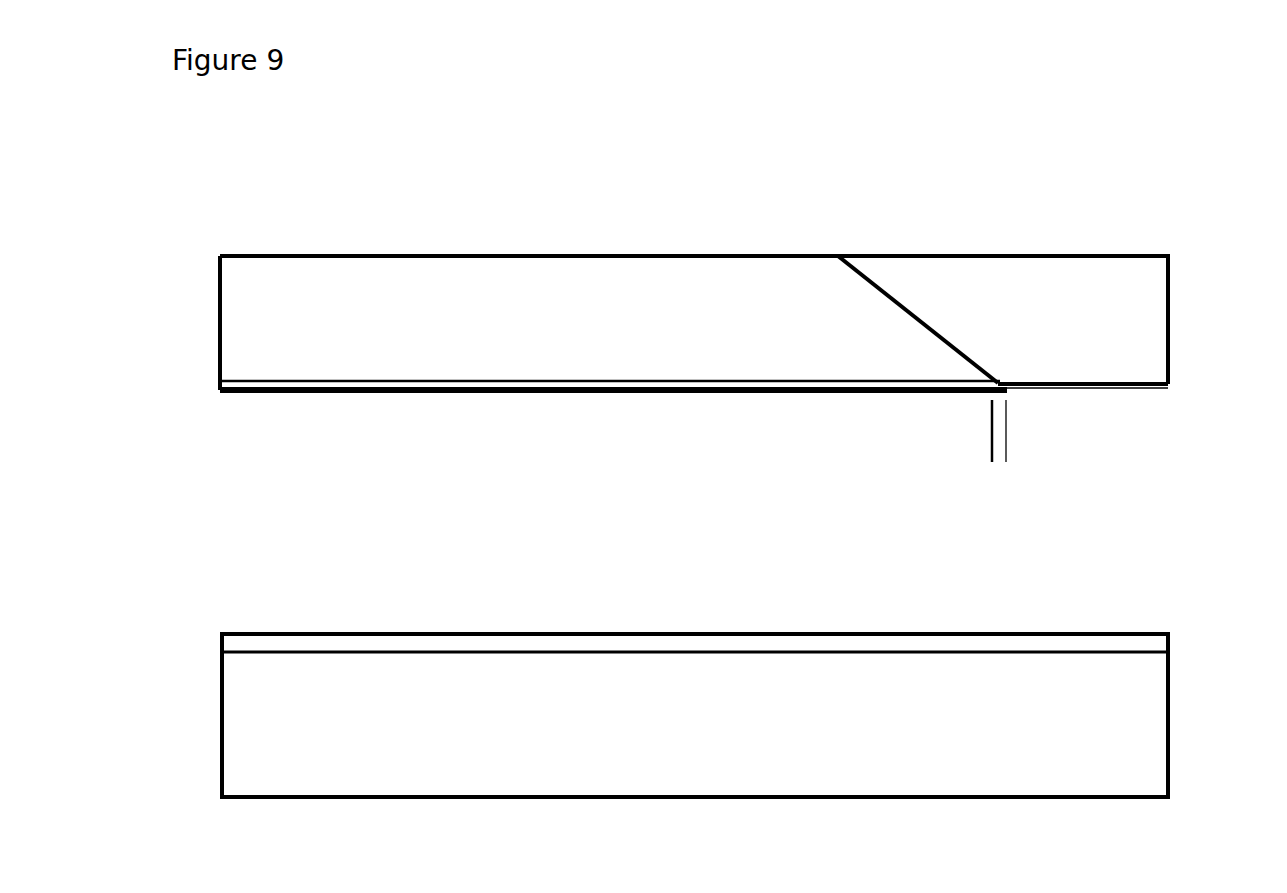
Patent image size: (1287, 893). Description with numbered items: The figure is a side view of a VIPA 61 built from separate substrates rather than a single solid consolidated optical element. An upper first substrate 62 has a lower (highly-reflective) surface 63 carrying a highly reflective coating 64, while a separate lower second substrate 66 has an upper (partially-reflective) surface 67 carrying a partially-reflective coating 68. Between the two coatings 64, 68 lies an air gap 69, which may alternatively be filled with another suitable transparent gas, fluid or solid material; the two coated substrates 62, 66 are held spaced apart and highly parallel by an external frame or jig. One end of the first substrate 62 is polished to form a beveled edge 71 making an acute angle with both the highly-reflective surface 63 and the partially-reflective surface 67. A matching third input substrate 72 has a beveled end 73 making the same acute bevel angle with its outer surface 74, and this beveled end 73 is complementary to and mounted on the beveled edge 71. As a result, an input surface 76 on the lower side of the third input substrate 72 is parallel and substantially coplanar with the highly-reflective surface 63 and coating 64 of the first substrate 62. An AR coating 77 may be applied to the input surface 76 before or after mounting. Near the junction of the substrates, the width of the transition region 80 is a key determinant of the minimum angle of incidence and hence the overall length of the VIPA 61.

The VIPA 61 is at (500, 163).
The first substrate 62 is at (694, 323).
The lower (highly-reflective) surface 63 is at (338, 374).
The highly reflective coating 64 is at (258, 395).
The second substrate 66 is at (695, 715).
The upper (partially-reflective) surface 67 is at (357, 668).
The partially-reflective coating 68 is at (240, 642).
The air gap 69 is at (694, 513).
The beveled edge 71 is at (918, 334).
The third input substrate 72 is at (1083, 364).
The beveled end 73 is at (915, 309).
The outer surface 74 is at (1049, 251).
The input surface 76 is at (1119, 376).
The AR coating 77 is at (1098, 394).
The transition region 80 is at (1000, 460).